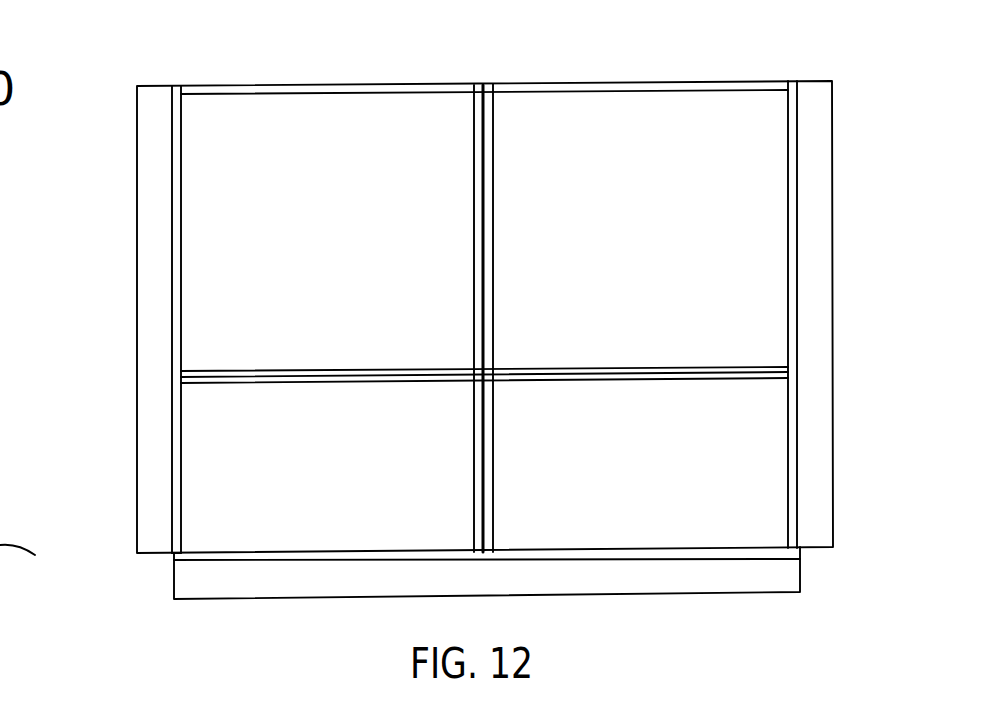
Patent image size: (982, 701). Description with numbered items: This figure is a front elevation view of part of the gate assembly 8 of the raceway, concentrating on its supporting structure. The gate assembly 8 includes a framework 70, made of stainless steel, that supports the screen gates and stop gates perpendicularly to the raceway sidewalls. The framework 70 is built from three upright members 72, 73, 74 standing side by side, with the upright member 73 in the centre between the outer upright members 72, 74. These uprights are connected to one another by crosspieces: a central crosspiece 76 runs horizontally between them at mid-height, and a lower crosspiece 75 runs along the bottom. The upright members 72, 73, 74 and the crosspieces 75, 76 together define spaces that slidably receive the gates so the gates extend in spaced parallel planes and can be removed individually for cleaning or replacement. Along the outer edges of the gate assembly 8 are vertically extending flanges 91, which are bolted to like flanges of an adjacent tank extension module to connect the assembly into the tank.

The gate assembly 8 is at (128, 540).
The framework 70 is at (168, 561).
The upright member 72 is at (172, 200).
The upright member 73 is at (485, 115).
The upright member 74 is at (797, 168).
The lower crosspiece 75 is at (337, 557).
The central crosspiece 76 is at (207, 371).
The vertically extending flange 91 is at (150, 425).